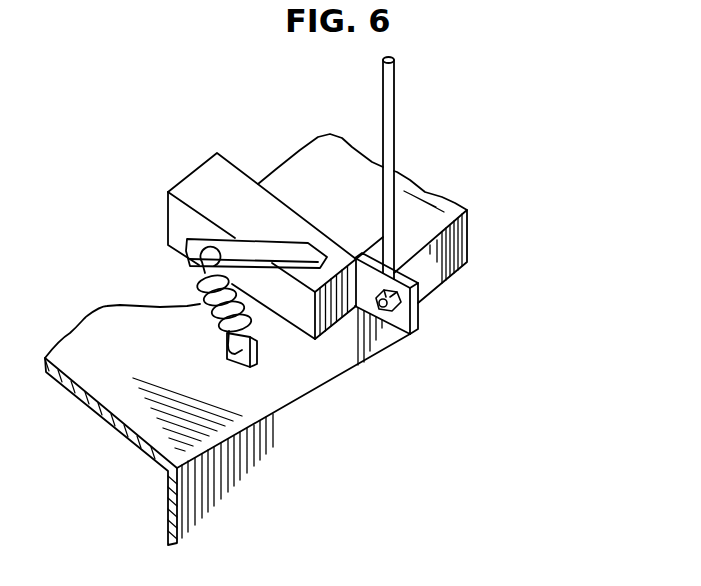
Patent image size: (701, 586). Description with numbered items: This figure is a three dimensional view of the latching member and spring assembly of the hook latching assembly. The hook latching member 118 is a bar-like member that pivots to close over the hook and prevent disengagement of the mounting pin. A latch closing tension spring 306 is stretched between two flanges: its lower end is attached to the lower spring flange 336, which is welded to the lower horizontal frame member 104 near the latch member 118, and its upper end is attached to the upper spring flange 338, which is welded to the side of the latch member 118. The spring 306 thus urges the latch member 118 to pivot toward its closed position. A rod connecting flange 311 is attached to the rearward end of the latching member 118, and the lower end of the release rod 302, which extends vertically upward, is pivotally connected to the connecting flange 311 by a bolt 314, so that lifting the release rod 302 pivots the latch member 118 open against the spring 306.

The lower horizontal frame member 104 is at (433, 198).
The hook latching member 118 is at (227, 180).
The release rod 302 is at (395, 115).
The latch closing tension spring 306 is at (165, 248).
The rod connecting flange 311 is at (420, 326).
The bolt 314 is at (380, 311).
The lower spring flange 336 is at (258, 352).
The upper spring flange 338 is at (266, 242).